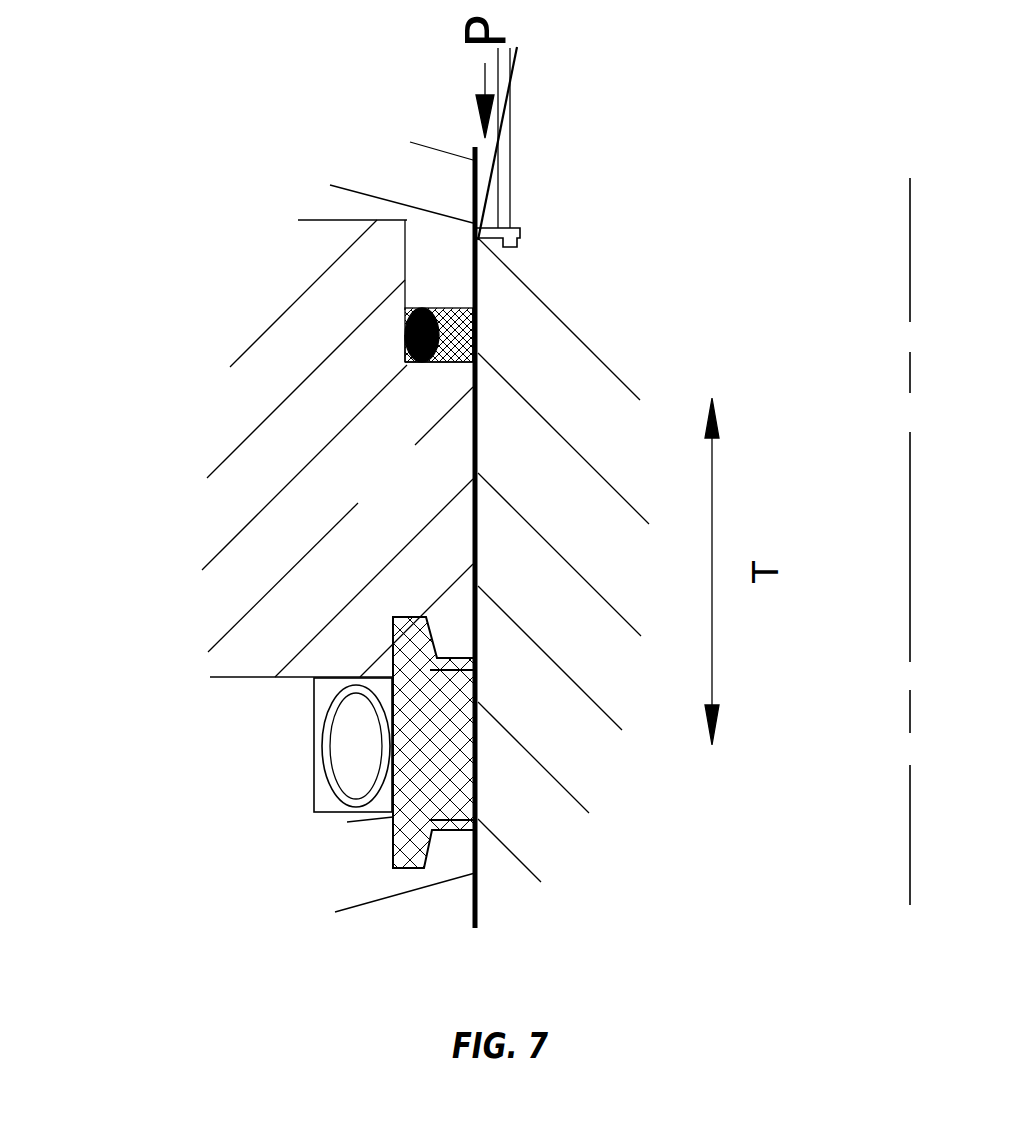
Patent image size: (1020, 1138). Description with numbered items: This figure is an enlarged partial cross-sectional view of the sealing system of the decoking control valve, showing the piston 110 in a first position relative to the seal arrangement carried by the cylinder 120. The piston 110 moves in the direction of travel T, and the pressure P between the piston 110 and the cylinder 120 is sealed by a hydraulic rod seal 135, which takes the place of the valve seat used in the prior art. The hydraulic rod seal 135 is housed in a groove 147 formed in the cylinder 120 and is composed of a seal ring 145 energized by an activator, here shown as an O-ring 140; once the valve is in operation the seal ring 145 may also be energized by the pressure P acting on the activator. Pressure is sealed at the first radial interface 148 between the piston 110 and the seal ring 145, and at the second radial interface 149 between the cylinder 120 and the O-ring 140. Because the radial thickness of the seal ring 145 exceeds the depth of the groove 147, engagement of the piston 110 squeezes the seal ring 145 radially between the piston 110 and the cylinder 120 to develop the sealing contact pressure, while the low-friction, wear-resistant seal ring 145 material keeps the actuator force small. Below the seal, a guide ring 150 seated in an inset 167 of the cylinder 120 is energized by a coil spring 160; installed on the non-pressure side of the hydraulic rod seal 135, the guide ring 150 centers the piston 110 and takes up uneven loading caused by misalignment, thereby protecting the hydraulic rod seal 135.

The piston 110 is at (489, 535).
The cylinder 120 is at (337, 448).
The hydraulic rod seal 135 is at (367, 173).
The O-ring 140 is at (309, 289).
The seal ring 145 is at (557, 265).
The groove 147 is at (446, 372).
The first radial interface 148 is at (478, 338).
The second radial interface 149 is at (402, 347).
The guide ring 150 is at (427, 735).
The coil spring 160 is at (215, 787).
The inset 167 is at (334, 822).